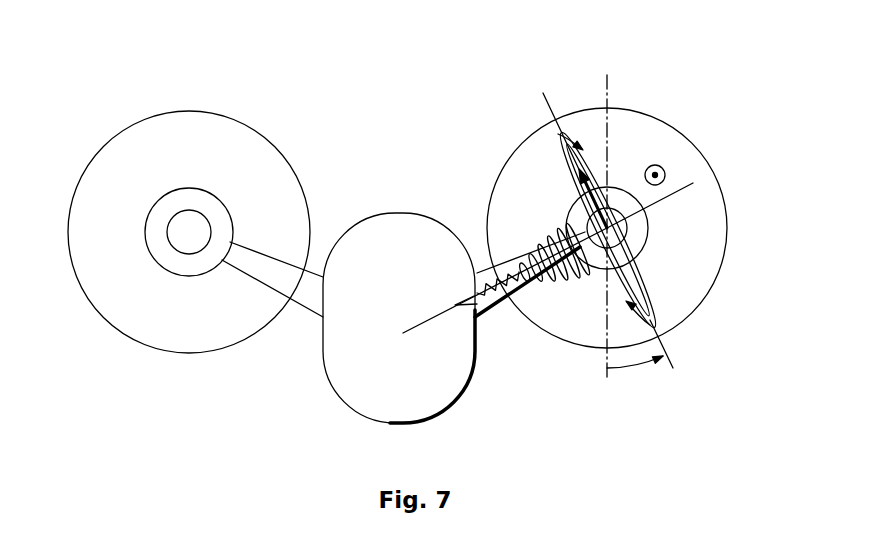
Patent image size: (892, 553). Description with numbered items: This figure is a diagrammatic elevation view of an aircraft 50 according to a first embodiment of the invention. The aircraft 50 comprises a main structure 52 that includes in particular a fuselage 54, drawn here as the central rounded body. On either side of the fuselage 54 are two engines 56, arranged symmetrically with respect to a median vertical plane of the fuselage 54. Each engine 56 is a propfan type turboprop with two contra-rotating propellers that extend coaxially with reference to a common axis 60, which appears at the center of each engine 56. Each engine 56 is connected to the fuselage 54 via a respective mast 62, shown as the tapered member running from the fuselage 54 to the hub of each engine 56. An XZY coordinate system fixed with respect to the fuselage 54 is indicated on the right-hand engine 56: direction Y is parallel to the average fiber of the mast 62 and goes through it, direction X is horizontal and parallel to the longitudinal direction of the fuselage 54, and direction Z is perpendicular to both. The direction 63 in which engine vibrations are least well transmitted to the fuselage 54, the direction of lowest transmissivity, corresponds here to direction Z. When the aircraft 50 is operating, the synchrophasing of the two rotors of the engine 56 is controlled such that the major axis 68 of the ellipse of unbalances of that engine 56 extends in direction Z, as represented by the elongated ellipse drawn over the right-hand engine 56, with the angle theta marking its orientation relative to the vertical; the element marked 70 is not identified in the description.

The aircraft 50 is at (627, 76).
The main structure 52 is at (349, 385).
The fuselage 54 is at (372, 214).
The engine 56 is at (213, 113).
The common axis 60 is at (650, 233).
The mast 62 is at (300, 308).
The direction of lowest transmissivity 63 is at (496, 300).
The major axis of the ellipse of unbalances 68 is at (625, 280).
The rotation arrow 70 is at (603, 283).